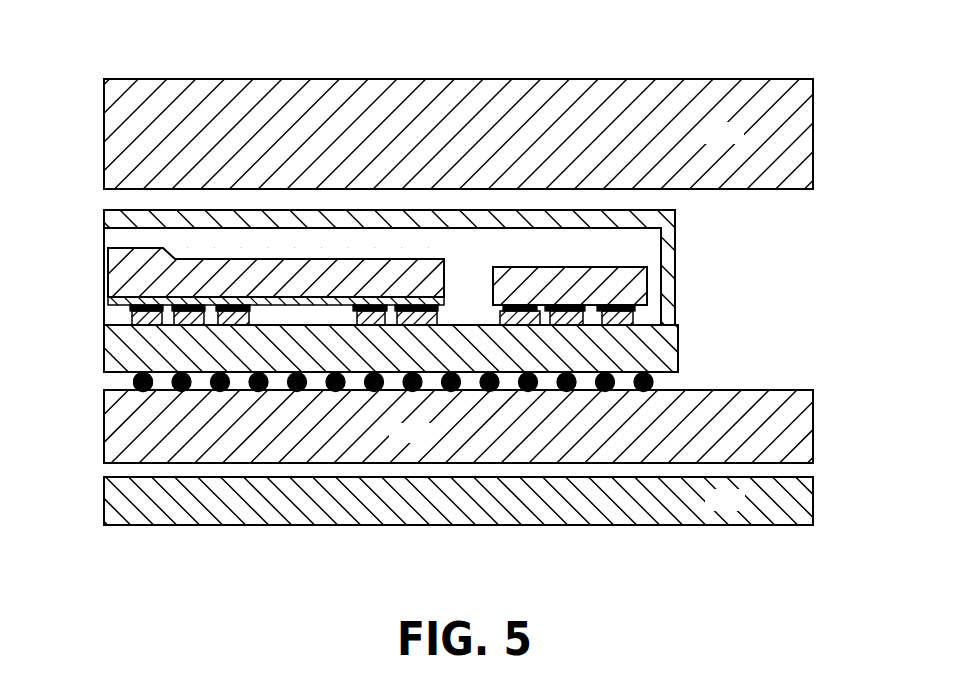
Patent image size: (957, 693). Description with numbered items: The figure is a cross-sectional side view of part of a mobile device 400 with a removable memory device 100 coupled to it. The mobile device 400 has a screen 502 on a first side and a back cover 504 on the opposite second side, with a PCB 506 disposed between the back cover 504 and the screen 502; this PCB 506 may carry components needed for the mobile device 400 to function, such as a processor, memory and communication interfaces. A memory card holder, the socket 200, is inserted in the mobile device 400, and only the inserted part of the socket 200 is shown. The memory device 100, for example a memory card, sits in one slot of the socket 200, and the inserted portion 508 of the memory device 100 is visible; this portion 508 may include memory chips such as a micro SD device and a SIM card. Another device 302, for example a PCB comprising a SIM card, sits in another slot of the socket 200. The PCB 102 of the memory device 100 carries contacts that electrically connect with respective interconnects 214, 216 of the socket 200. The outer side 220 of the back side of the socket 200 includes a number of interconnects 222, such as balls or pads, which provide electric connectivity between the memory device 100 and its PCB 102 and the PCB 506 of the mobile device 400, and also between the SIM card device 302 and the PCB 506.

The memory device 100 is at (385, 291).
The PCB of the memory device 102 is at (106, 302).
The socket 200 is at (677, 271).
The interconnect 214 is at (106, 338).
The interconnect 216 is at (392, 326).
The outer side of the back side of the socket 220 is at (665, 382).
The interconnects 222 is at (134, 381).
The another device 302 is at (565, 267).
The mobile device 400 is at (492, 285).
The screen 502 is at (740, 142).
The back cover 504 is at (742, 508).
The PCB 506 is at (813, 432).
The portion of the memory device 508 is at (327, 302).